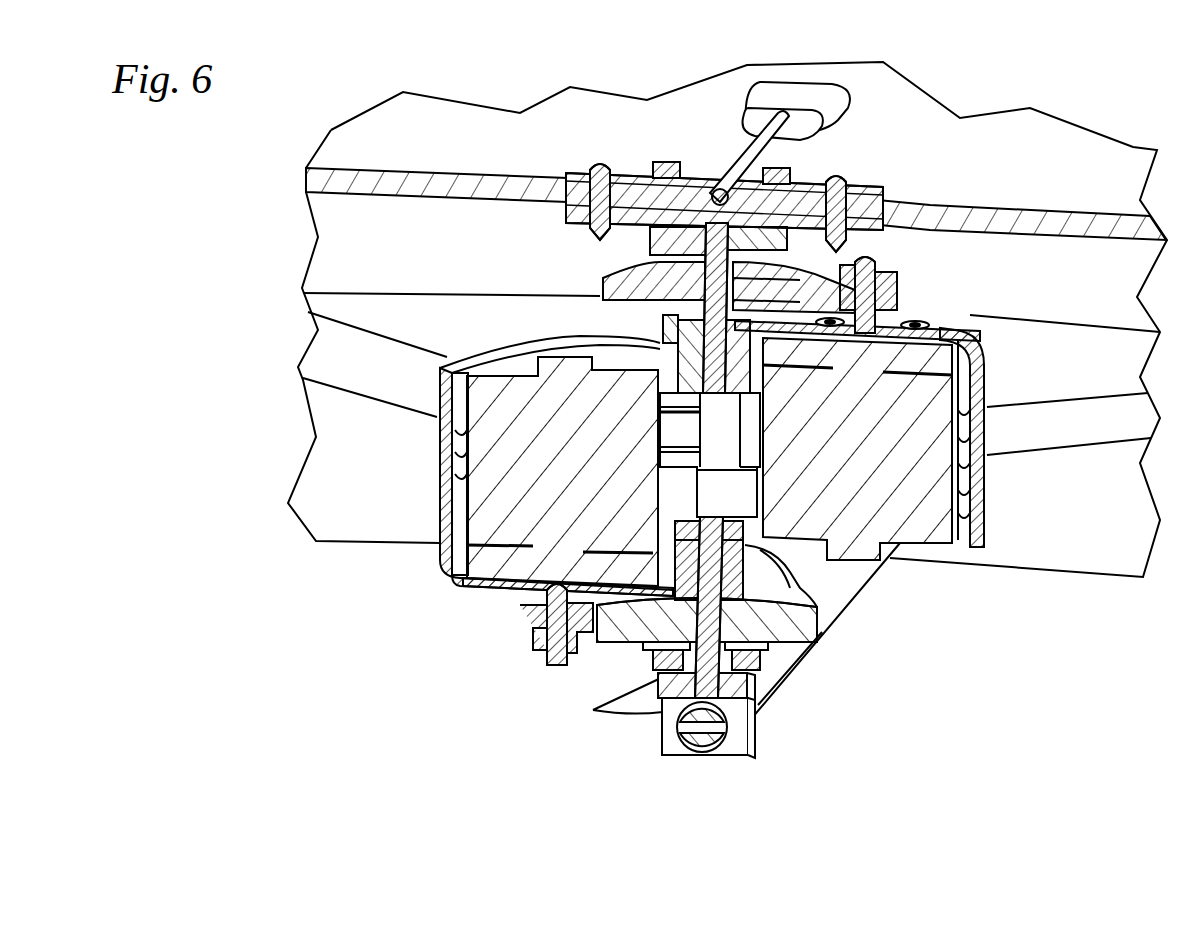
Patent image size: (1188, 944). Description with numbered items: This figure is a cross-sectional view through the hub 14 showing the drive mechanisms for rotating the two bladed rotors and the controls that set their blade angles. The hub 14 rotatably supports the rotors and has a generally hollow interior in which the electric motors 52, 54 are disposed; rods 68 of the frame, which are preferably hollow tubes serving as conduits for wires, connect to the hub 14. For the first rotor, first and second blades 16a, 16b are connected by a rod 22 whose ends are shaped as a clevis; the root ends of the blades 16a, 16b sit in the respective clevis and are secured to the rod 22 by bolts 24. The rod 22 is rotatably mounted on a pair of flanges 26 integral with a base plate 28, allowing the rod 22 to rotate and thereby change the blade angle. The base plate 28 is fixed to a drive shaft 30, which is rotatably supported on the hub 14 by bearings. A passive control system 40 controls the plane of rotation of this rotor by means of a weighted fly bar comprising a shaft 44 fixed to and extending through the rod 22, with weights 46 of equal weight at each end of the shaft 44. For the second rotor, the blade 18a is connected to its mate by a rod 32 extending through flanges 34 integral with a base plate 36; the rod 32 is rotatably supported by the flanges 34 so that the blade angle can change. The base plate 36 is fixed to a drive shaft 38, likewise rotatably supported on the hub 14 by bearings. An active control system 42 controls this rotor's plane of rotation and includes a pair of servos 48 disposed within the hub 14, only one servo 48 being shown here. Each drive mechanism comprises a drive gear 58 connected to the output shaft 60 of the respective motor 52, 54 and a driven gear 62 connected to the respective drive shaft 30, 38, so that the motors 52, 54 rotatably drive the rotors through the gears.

The hub 14 is at (985, 493).
The first blade 16a is at (990, 205).
The second blade 16b is at (437, 172).
The first blade 18a is at (837, 637).
The rod 22 is at (633, 225).
The bolts 24 is at (597, 165).
The flanges 26 is at (660, 160).
The base plate 28 is at (647, 255).
The drive shaft 30 is at (573, 337).
The rod 32 is at (697, 757).
The flanges 34 is at (732, 755).
The base plate 36 is at (724, 734).
The drive shaft 38 is at (757, 673).
The passive control system 40 is at (724, 100).
The active control system 42 is at (793, 580).
The shaft 44 is at (745, 165).
The weights 46 is at (790, 82).
The servos 48 is at (752, 516).
The electric motor 52 is at (930, 535).
The electric motor 54 is at (463, 588).
The drive gear 58 is at (887, 290).
The output shaft 60 is at (867, 257).
The driven gear 62 is at (627, 300).
The rods 68 is at (390, 407).